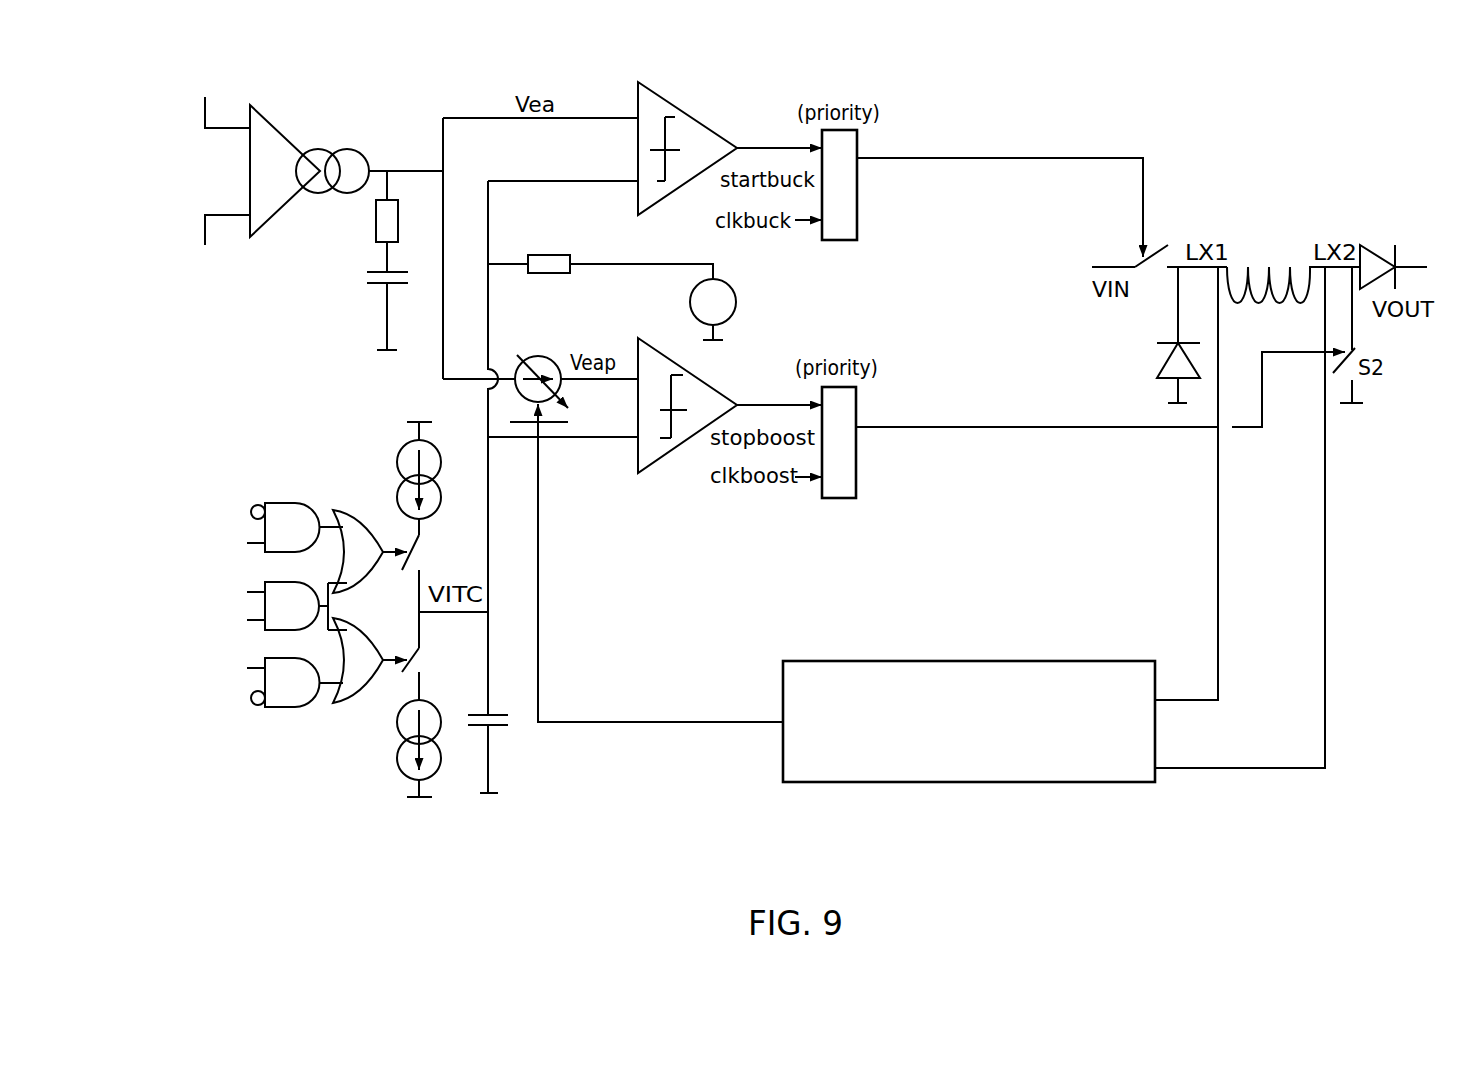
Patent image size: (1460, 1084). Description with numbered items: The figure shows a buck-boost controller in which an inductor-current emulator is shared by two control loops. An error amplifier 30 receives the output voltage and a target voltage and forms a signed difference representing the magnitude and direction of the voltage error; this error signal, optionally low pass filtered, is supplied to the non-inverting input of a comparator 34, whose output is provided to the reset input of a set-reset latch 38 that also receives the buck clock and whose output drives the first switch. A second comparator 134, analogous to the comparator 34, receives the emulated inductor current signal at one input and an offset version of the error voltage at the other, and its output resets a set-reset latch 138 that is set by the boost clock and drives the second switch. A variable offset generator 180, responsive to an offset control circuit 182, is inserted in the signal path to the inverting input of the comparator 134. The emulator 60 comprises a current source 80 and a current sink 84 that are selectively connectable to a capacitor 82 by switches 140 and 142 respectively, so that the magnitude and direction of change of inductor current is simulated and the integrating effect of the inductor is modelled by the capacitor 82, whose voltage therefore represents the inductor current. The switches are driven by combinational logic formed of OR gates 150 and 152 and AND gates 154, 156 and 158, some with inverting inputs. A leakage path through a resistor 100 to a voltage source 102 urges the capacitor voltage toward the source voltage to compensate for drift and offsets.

The error amplifier 30 is at (285, 122).
The comparator 34 is at (690, 110).
The set-reset latch 38 is at (857, 187).
The resistor 100 is at (582, 257).
The voltage source 102 is at (737, 303).
The second comparator 134 is at (703, 382).
The set-reset latch 138 is at (856, 450).
The variable offset generator 180 is at (527, 357).
The current source 80 is at (397, 450).
The current sink 84 is at (398, 770).
The switch 140 is at (422, 562).
The switch 142 is at (423, 645).
The capacitor 82 is at (510, 720).
The OR gate 150 is at (358, 510).
The OR gate 152 is at (347, 703).
The AND gate 154 is at (190, 528).
The AND gate 156 is at (190, 605).
The AND gate 158 is at (190, 685).
The emulator 60 is at (258, 635).
The offset control circuit 182 is at (972, 661).